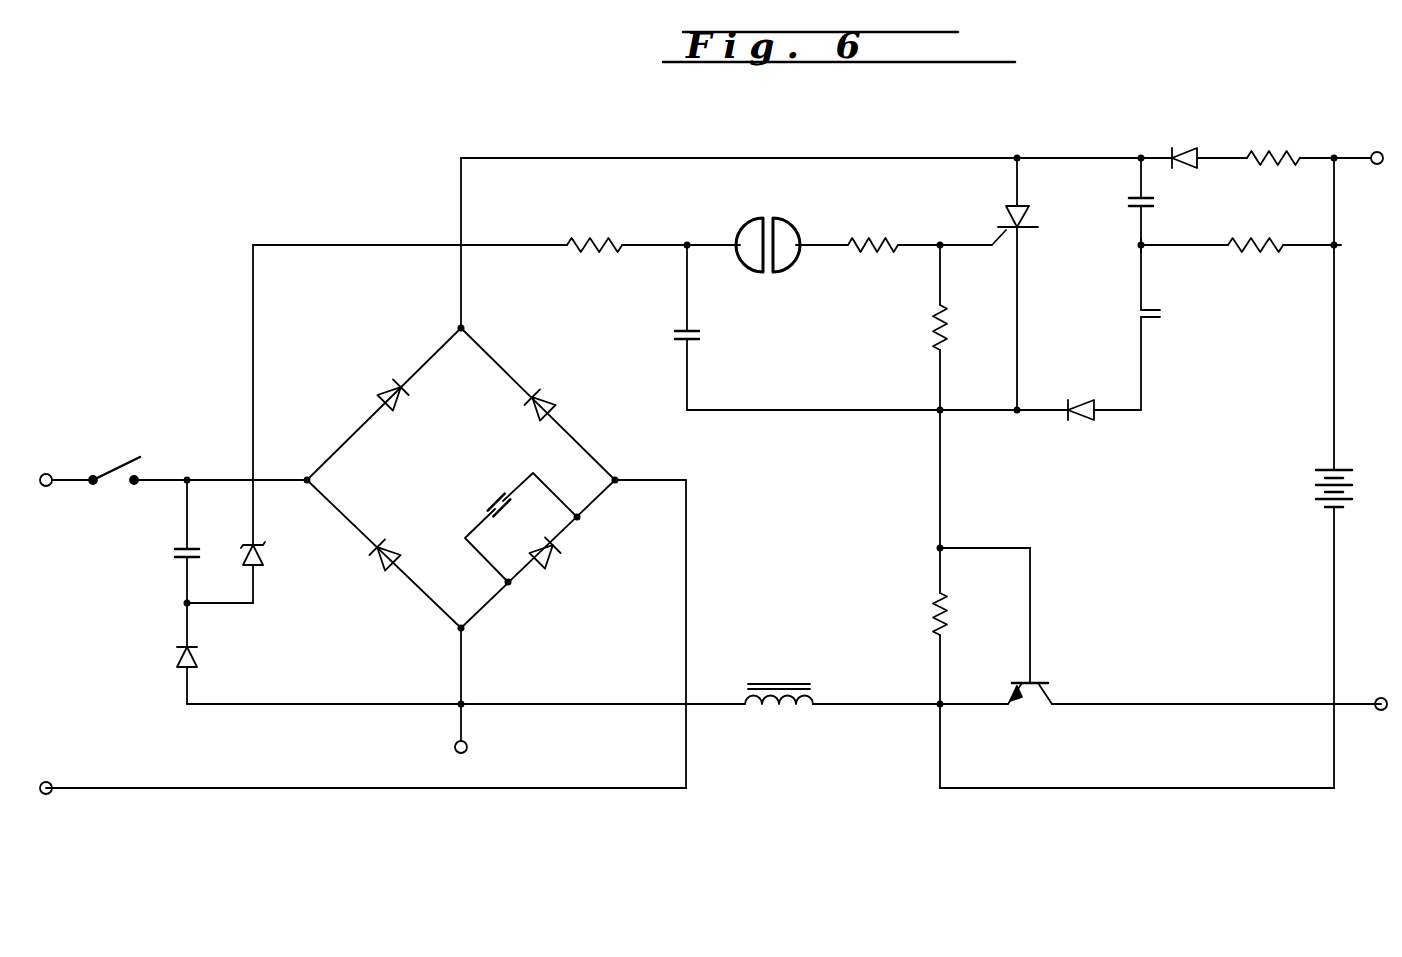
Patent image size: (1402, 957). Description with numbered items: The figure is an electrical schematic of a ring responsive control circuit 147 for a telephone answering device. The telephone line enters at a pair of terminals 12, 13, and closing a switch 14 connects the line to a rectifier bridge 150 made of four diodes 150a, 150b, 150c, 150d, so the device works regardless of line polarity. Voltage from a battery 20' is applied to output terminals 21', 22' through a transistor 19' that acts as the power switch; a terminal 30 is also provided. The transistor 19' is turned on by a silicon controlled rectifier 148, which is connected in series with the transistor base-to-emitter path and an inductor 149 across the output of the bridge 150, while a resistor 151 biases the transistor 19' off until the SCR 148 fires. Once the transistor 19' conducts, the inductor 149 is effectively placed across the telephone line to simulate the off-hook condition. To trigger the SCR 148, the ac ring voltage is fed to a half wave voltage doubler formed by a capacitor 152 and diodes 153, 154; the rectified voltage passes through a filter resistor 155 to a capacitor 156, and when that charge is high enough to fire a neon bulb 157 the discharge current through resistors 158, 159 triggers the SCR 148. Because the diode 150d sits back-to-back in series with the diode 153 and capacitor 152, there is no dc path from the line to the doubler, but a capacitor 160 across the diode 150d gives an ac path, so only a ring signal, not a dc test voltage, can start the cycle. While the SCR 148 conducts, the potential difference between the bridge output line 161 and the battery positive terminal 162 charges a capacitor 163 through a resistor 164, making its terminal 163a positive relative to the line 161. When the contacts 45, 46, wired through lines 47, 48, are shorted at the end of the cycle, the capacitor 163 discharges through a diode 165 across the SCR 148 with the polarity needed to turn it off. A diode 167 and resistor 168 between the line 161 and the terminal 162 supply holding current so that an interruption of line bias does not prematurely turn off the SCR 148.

The terminal 12 is at (46, 474).
The terminal 13 is at (46, 794).
The switch 14 is at (118, 460).
The transistor 19' is at (1051, 668).
The battery 20' is at (1301, 486).
The terminal 21' is at (1370, 161).
The terminal 22' is at (1369, 703).
The terminal 30 is at (467, 747).
The electrical contact 45 is at (1164, 305).
The electrical contact 46 is at (1155, 320).
The line 47 is at (1138, 298).
The line 48 is at (1140, 354).
The charging circuit 147 is at (372, 190).
The silicon controlled rectifier 148 is at (1004, 216).
The inductor 149 is at (787, 668).
The rectifier bridge 150 is at (455, 478).
The diode 150a is at (376, 392).
The diode 150b is at (548, 400).
The diode 150c is at (378, 575).
The diode 150d is at (556, 565).
The resistor 151 is at (934, 618).
The capacitor 152 is at (175, 554).
The diode 153 is at (175, 659).
The diode 154 is at (265, 556).
The filter resistor 155 is at (593, 240).
The capacitor 156 is at (702, 334).
The neon bulb 157 is at (778, 222).
The resistor 158 is at (874, 236).
The resistor 159 is at (936, 312).
The capacitor 160 is at (488, 500).
The output terminal 161 is at (580, 157).
The positive terminal 162 is at (1340, 248).
The capacitor 163 is at (1156, 201).
The capacitor terminal 163a is at (1138, 248).
The resistor 164 is at (1254, 236).
The diode 165 is at (1086, 420).
The diode 167 is at (1180, 146).
The resistor 168 is at (1258, 150).